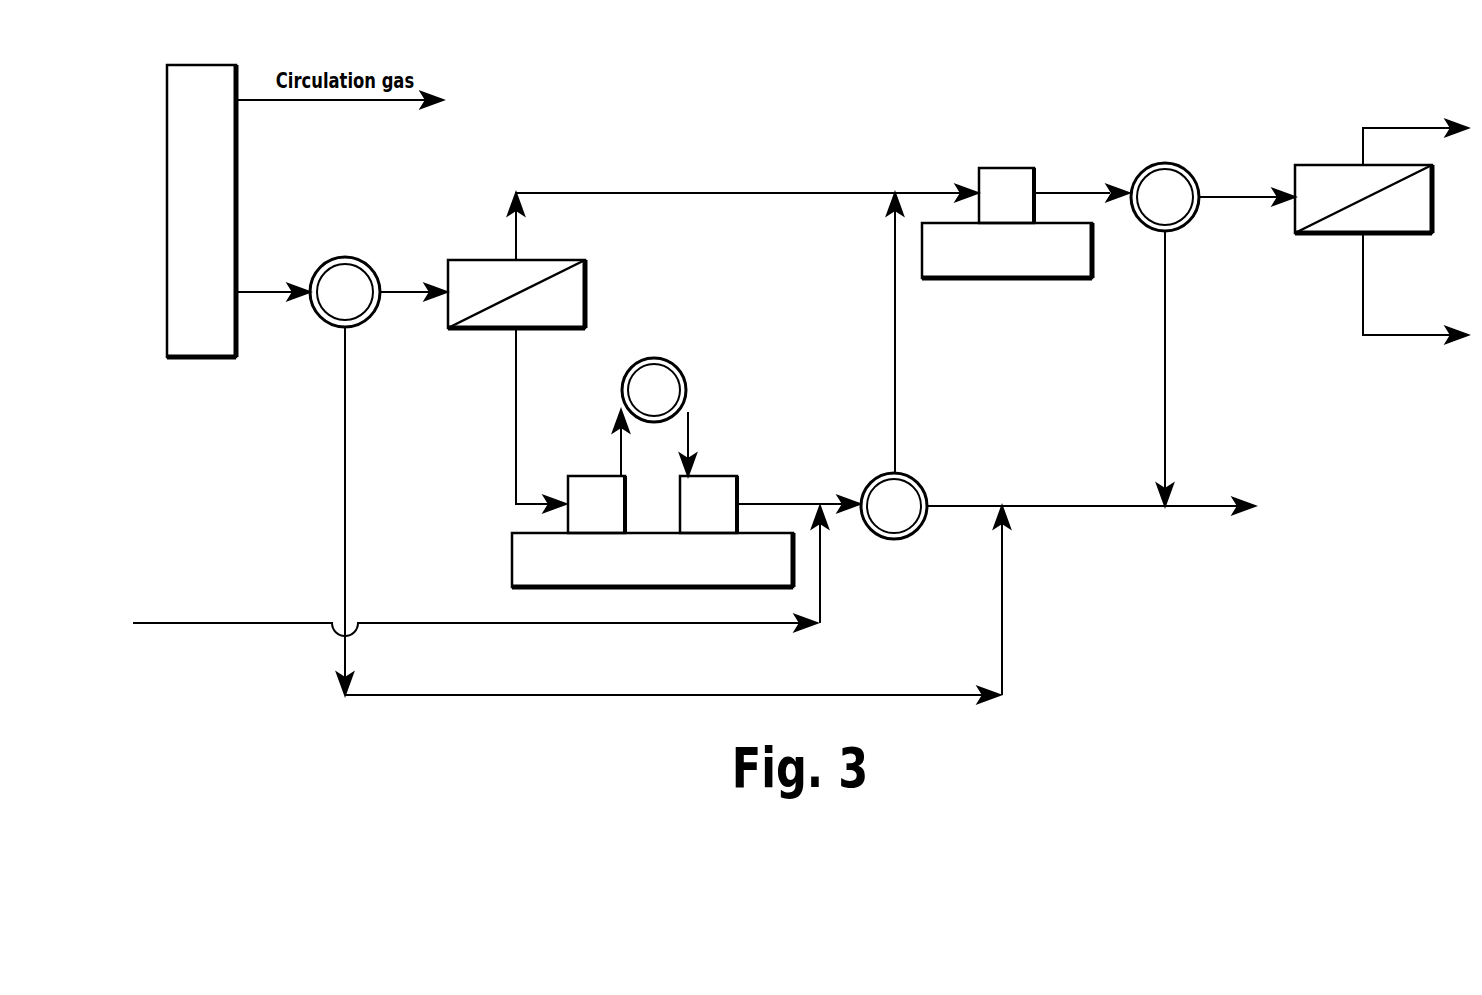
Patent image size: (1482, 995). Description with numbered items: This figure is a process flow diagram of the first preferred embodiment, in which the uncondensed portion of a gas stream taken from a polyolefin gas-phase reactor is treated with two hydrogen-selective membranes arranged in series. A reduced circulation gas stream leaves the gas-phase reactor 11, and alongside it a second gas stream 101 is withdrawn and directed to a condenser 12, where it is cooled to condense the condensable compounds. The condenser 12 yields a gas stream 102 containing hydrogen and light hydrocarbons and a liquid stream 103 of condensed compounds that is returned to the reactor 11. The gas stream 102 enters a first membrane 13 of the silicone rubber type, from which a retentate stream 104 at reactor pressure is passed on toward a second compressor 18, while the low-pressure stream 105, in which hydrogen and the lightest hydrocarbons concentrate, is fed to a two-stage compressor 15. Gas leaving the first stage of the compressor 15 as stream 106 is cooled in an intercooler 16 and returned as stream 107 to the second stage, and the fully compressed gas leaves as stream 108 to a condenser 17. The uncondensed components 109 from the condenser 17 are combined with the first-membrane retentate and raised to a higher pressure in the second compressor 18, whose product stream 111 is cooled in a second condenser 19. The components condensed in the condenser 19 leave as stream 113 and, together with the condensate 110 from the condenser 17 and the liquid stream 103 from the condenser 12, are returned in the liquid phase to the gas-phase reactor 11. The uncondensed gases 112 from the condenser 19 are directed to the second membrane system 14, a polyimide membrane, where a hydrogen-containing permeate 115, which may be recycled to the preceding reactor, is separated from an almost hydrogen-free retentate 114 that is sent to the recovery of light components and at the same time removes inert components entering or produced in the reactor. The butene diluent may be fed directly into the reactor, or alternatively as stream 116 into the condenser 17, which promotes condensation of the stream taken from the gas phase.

The gas-phase reactor 11 is at (183, 165).
The condenser 12 is at (345, 257).
The membrane separator 13 is at (585, 280).
The second membrane system 14 is at (1312, 165).
The two-stage compressor 15 is at (512, 558).
The intercooler 16 is at (686, 383).
The condenser 17 is at (895, 539).
The second compressor 18 is at (1005, 168).
The second condenser 19 is at (1165, 163).
The second gas stream 101 is at (273, 281).
The gas stream 102 is at (413, 281).
The condensed stream 103 is at (673, 515).
The retentate stream 104 is at (743, 210).
The retentate stream 105 is at (541, 420).
The compressed gas stream 106 is at (599, 443).
The cooled gas stream 107 is at (710, 444).
The compressor discharge stream 108 is at (798, 489).
The uncondensed gas stream 109 is at (914, 333).
The condensate stream 110 is at (964, 487).
The second compressor product stream 111 is at (1081, 181).
The uncondensed gas stream 112 is at (1148, 338).
The condensate stream 113 is at (1185, 368).
The retentate stream 114 is at (1415, 288).
The permeate stream 115 is at (1415, 128).
The butene feed stream 116 is at (479, 582).